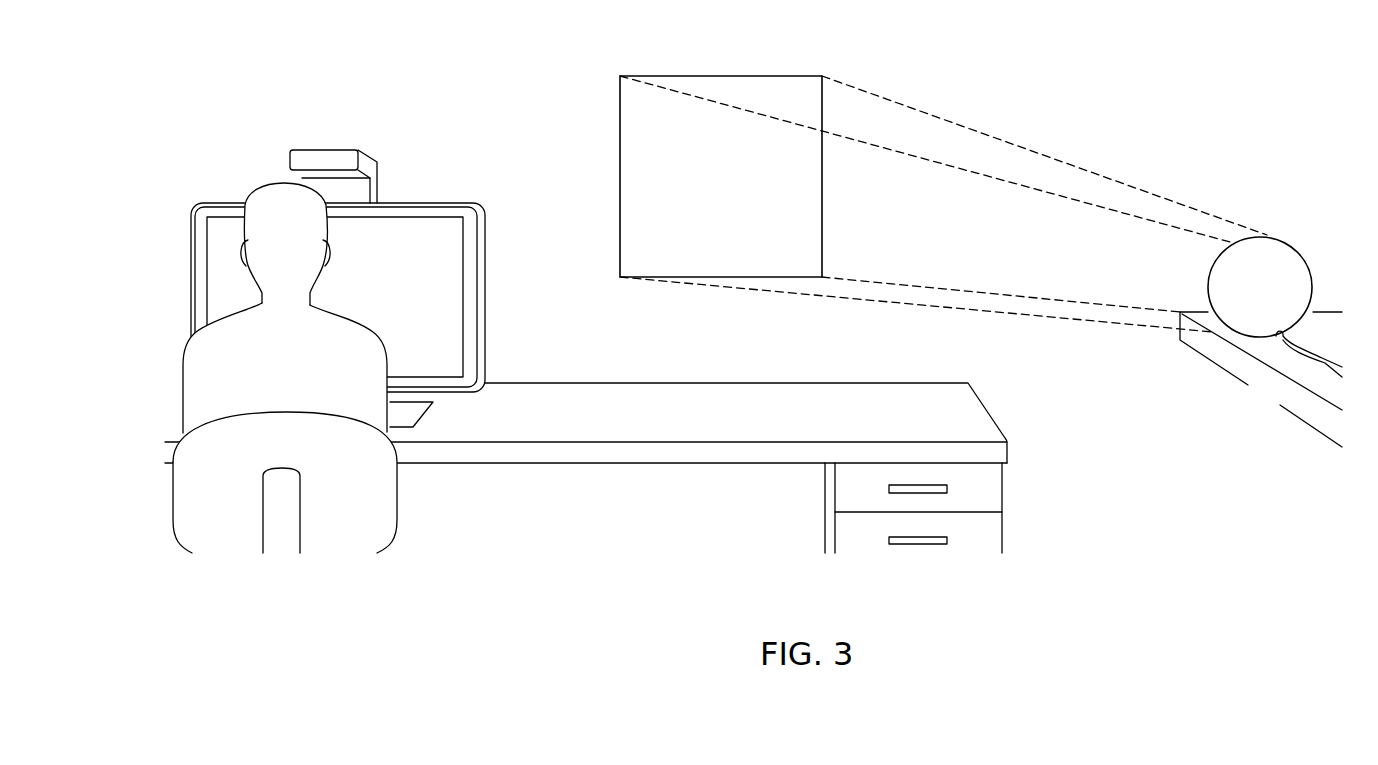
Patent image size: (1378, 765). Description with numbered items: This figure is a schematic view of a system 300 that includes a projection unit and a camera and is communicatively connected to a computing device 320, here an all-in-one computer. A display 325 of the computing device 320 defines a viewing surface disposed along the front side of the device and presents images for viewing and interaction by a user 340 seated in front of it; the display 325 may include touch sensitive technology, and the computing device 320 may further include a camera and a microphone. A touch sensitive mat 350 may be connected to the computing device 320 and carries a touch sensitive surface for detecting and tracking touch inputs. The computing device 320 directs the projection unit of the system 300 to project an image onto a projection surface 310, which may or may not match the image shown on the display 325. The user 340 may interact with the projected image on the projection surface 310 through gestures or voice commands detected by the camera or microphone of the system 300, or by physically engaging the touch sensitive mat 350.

The system 300 is at (1212, 273).
The projection surface 310 is at (620, 135).
The computing device 320 is at (300, 150).
The display 325 is at (191, 216).
The user 340 is at (182, 385).
The touch sensitive mat 350 is at (417, 425).